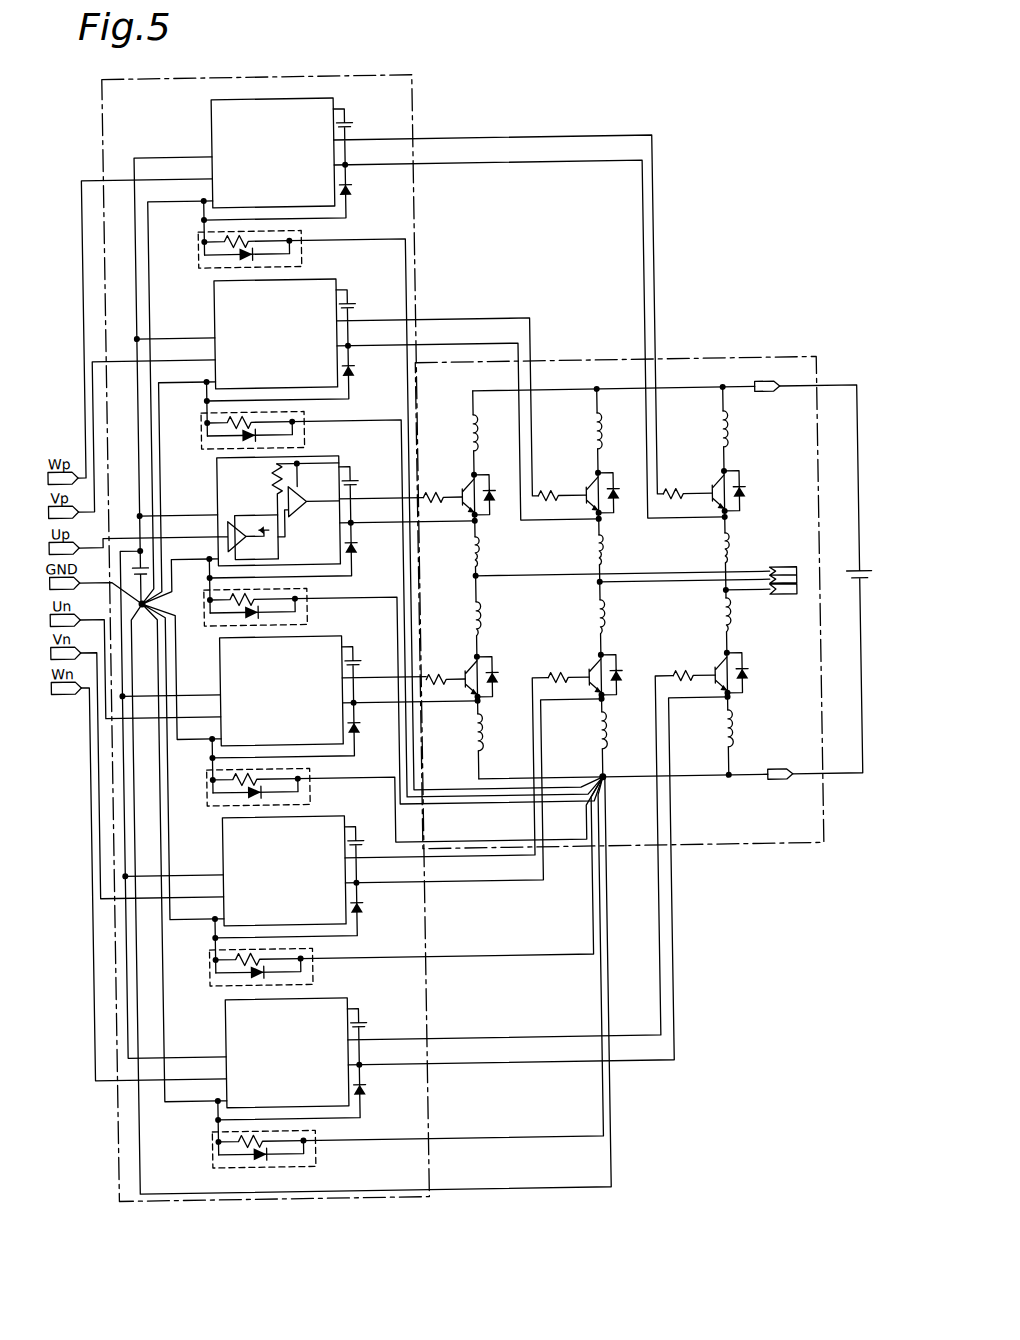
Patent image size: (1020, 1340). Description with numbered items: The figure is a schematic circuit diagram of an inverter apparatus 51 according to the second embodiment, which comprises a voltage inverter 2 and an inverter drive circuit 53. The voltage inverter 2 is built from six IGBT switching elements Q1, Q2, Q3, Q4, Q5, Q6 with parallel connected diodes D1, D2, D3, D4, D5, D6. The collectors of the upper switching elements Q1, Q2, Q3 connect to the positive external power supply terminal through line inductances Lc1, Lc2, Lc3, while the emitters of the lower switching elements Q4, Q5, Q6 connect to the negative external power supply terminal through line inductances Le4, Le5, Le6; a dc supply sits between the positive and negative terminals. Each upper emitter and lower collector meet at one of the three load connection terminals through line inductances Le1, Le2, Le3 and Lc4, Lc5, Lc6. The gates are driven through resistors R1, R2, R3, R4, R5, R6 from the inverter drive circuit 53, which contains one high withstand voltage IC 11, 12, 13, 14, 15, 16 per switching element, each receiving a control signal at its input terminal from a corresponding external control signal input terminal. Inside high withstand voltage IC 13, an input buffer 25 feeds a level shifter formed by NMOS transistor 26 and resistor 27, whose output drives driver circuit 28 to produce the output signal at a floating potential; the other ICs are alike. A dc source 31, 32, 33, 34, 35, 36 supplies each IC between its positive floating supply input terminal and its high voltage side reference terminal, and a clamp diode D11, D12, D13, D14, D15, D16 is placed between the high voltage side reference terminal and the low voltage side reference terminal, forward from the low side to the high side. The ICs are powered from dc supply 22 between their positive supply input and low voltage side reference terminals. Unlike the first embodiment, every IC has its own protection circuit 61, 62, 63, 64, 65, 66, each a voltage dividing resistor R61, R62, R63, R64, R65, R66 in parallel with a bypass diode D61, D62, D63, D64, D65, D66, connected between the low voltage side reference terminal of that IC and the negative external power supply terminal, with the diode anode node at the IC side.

The voltage inverter 2 is at (686, 382).
The high withstand voltage IC 11 is at (219, 114).
The high withstand voltage IC 12 is at (219, 295).
The high withstand voltage IC 13 is at (219, 472).
The high withstand voltage IC 14 is at (219, 652).
The high withstand voltage IC 15 is at (219, 832).
The high withstand voltage IC 16 is at (219, 1014).
The dc supply 22 is at (141, 551).
The input buffer 25 is at (238, 545).
The NMOS transistor 26 is at (264, 523).
The resistor 27 is at (276, 482).
The driver circuit 28 is at (305, 490).
The dc source 31 is at (352, 119).
The dc source 32 is at (352, 300).
The dc source 33 is at (352, 480).
The dc source 34 is at (352, 657).
The dc source 35 is at (352, 837).
The dc source 36 is at (352, 1019).
The inverter apparatus 51 is at (660, 96).
The inverter drive circuit 53 is at (394, 97).
The protection circuit 61 is at (305, 258).
The protection circuit 62 is at (305, 439).
The protection circuit 63 is at (305, 616).
The protection circuit 64 is at (305, 796).
The protection circuit 65 is at (305, 976).
The protection circuit 66 is at (305, 1158).
The clamp diode D11 is at (358, 191).
The clamp diode D12 is at (358, 372).
The clamp diode D13 is at (358, 549).
The clamp diode D14 is at (358, 729).
The clamp diode D15 is at (358, 909).
The clamp diode D16 is at (358, 1091).
The bypass diode D61 is at (240, 252).
The bypass diode D62 is at (240, 433).
The bypass diode D63 is at (240, 610).
The bypass diode D64 is at (240, 790).
The bypass diode D65 is at (240, 970).
The bypass diode D66 is at (240, 1152).
The voltage dividing resistor R61 is at (252, 237).
The voltage dividing resistor R62 is at (252, 418).
The voltage dividing resistor R63 is at (256, 595).
The voltage dividing resistor R64 is at (252, 775).
The voltage dividing resistor R65 is at (252, 955).
The voltage dividing resistor R66 is at (252, 1137).
The IGBT switching element Q1 is at (464, 484).
The IGBT switching element Q2 is at (588, 484).
The IGBT switching element Q3 is at (714, 484).
The IGBT switching element Q4 is at (464, 667).
The IGBT switching element Q5 is at (588, 667).
The IGBT switching element Q6 is at (714, 667).
The diode D1 is at (494, 486).
The diode D2 is at (618, 486).
The diode D3 is at (744, 486).
The diode D4 is at (494, 669).
The diode D5 is at (618, 669).
The diode D6 is at (744, 669).
The resistor R1 is at (430, 492).
The resistor R2 is at (548, 492).
The resistor R3 is at (674, 492).
The resistor R4 is at (430, 676).
The resistor R5 is at (552, 676).
The resistor R6 is at (676, 676).
The line inductance Lc1 is at (478, 434).
The line inductance Lc2 is at (602, 434).
The line inductance Lc3 is at (728, 434).
The line inductance Lc4 is at (478, 621).
The line inductance Lc5 is at (602, 621).
The line inductance Lc6 is at (727, 614).
The line inductance Le1 is at (502, 551).
The line inductance Le2 is at (626, 549).
The line inductance Le3 is at (752, 547).
The line inductance Le4 is at (480, 731).
The line inductance Le5 is at (604, 731).
The line inductance Le6 is at (730, 731).